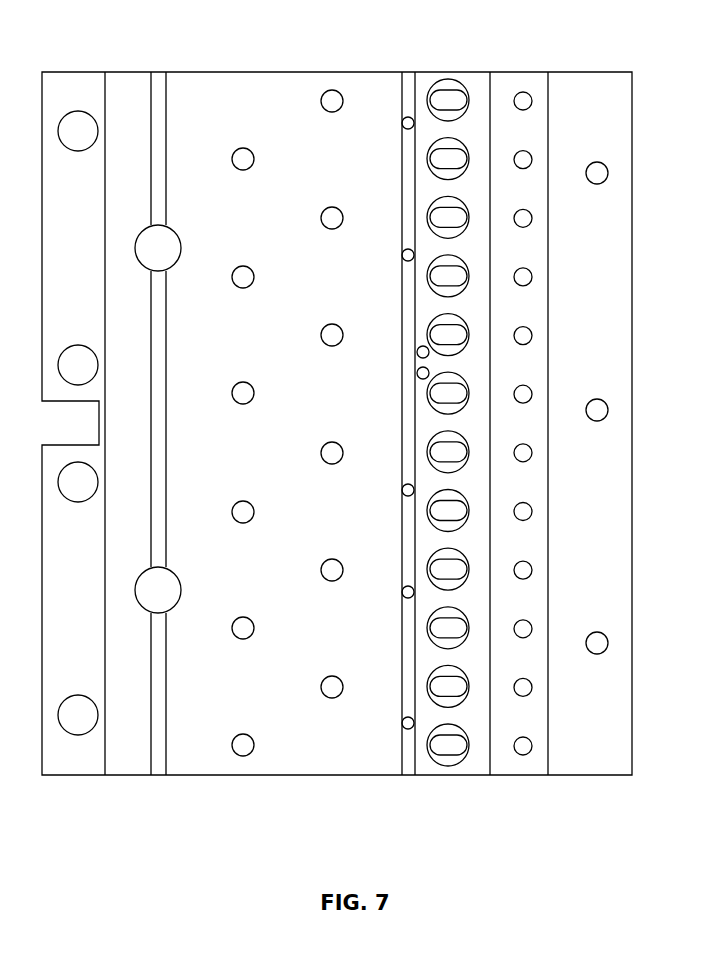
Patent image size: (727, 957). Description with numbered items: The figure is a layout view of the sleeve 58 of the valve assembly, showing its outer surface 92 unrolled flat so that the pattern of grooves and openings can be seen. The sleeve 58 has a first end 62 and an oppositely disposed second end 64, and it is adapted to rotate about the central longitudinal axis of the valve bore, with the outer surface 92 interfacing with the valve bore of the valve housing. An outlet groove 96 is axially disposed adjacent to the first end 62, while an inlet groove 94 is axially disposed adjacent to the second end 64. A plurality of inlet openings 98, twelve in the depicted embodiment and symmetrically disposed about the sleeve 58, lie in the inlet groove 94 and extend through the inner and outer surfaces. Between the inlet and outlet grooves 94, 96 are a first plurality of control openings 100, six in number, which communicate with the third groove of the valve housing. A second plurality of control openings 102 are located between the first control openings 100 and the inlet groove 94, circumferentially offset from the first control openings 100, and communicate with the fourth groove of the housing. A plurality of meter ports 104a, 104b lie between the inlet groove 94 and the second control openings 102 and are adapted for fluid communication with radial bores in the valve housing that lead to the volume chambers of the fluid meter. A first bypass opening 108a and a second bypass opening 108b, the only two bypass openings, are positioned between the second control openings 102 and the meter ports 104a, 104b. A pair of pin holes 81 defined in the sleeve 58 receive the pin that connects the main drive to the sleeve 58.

The sleeve 58 is at (126, 42).
The first end 62 is at (88, 777).
The second end 64 is at (590, 777).
The pin holes 81 is at (135, 247).
The outer surface 92 is at (228, 336).
The inlet groove 94 is at (518, 762).
The outlet groove 96 is at (77, 765).
The inlet openings 98 is at (525, 210).
The first plurality of control openings 100 is at (234, 151).
The second plurality of control openings 102 is at (323, 93).
The meter ports 104a is at (428, 148).
The meter ports 104b is at (427, 100).
The first bypass opening 108a is at (417, 373).
The second bypass opening 108b is at (417, 352).